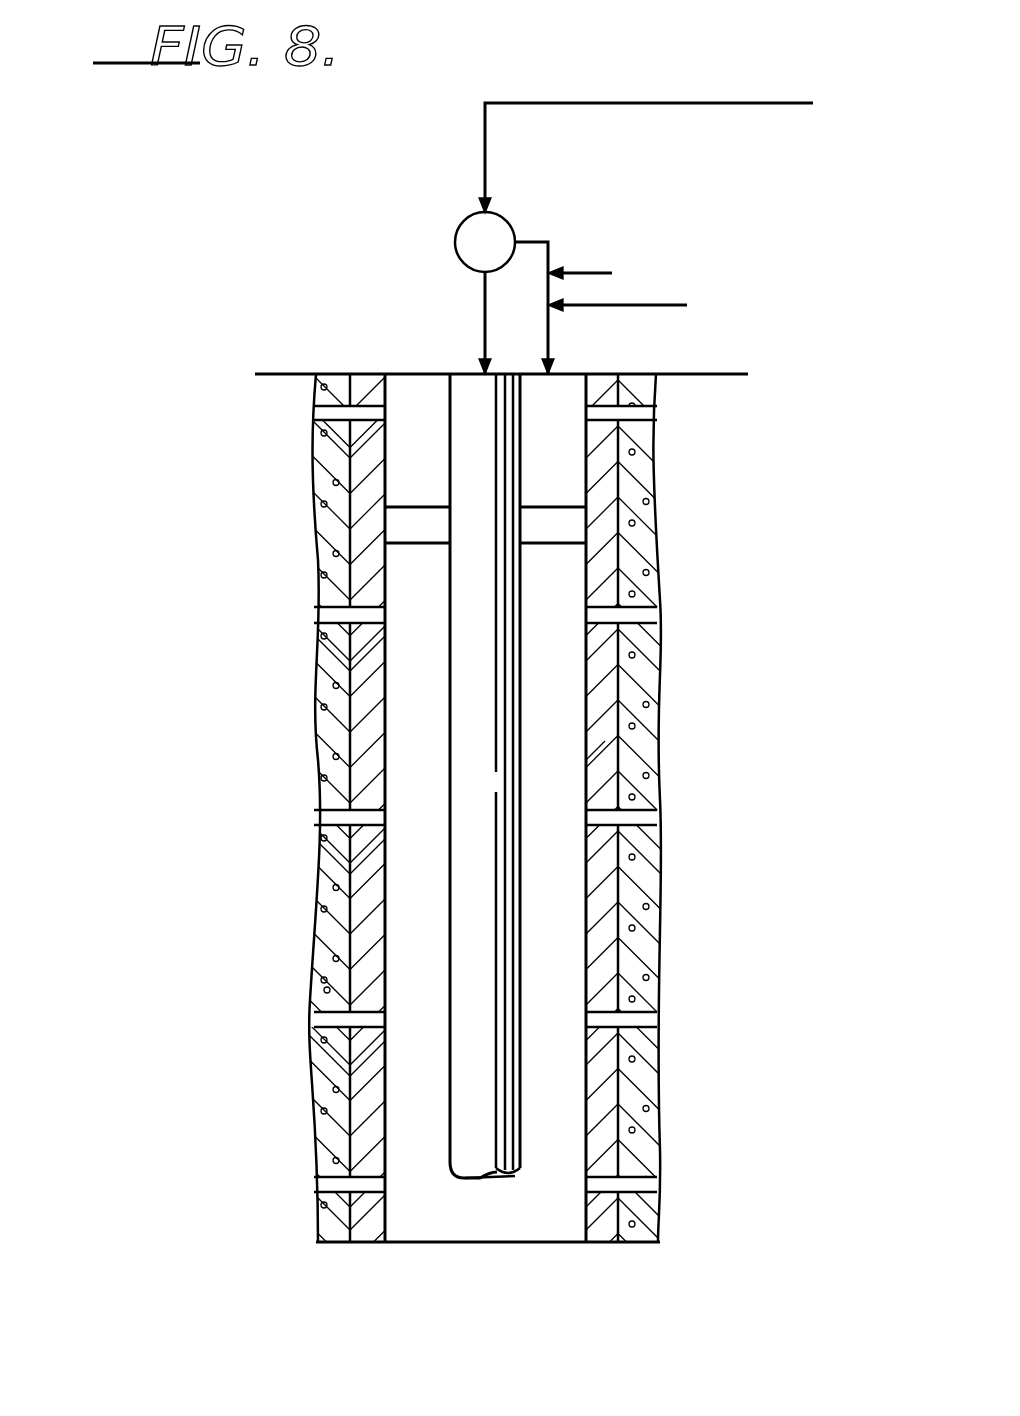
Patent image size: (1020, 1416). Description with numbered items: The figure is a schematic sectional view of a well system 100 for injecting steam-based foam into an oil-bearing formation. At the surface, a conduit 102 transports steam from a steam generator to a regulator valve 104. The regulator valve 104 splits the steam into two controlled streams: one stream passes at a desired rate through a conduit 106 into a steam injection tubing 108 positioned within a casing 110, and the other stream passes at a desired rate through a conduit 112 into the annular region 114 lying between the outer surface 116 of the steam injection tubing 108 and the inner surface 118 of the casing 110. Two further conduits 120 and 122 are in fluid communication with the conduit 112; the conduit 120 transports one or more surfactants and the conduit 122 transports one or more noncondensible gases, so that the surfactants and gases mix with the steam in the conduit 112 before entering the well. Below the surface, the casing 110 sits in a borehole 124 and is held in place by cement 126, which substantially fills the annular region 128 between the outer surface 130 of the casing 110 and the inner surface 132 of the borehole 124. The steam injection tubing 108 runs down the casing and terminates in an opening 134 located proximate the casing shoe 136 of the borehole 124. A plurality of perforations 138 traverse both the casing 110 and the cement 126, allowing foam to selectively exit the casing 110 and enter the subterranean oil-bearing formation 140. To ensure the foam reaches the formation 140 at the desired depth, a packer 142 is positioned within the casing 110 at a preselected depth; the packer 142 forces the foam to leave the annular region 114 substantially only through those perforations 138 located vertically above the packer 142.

The well system 100 is at (305, 220).
The conduit 102 is at (651, 103).
The regulator valve 104 is at (507, 222).
The conduit 106 is at (480, 292).
The steam injection tubing 108 is at (460, 460).
The casing 110 is at (608, 475).
The conduit 112 is at (552, 332).
The annular region 114 is at (577, 590).
The outer surface of the steam injection tubing 116 is at (521, 658).
The inner surface of the casing 118 is at (590, 722).
The conduit 120 is at (590, 273).
The conduit 122 is at (654, 305).
The borehole 124 is at (308, 712).
The cement 126 is at (320, 758).
The annular region 128 is at (325, 860).
The outer surface of the casing 130 is at (348, 922).
The inner surface of the borehole 132 is at (312, 988).
The opening 134 is at (510, 1175).
The casing shoe 136 is at (341, 1243).
The perforations 138 is at (650, 412).
The subterranean oil-bearing formation 140 is at (782, 886).
The packer 142 is at (400, 527).